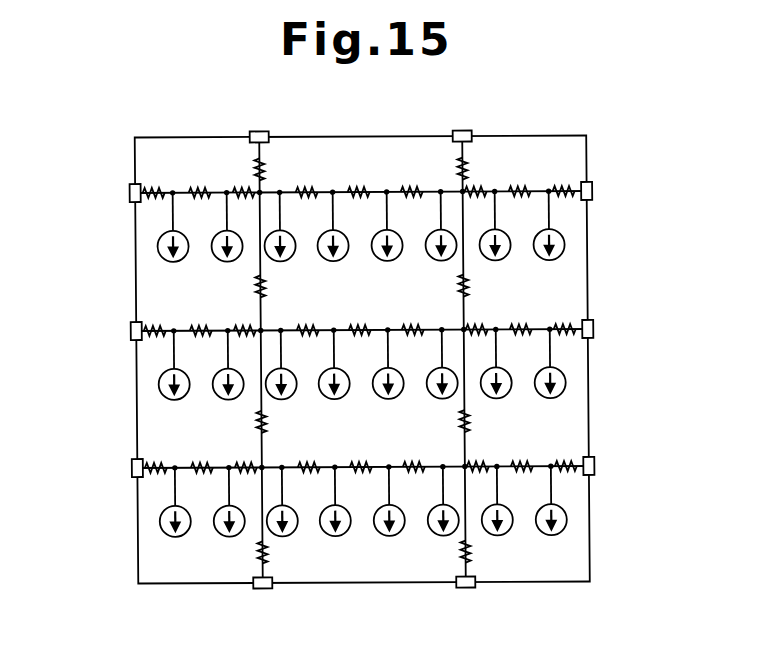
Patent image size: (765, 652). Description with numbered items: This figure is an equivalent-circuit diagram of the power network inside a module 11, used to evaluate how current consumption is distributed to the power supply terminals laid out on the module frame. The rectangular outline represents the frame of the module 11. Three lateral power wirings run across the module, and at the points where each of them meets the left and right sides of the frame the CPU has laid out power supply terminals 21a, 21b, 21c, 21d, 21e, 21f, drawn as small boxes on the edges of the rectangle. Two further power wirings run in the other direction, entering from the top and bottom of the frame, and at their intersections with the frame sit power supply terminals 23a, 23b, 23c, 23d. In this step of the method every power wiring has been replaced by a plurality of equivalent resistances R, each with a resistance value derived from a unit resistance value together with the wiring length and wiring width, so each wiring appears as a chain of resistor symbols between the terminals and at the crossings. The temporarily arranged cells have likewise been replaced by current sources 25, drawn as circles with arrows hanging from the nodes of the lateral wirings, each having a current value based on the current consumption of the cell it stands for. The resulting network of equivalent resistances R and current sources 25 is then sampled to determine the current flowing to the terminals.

The module 11 is at (552, 135).
The power supply terminal 21a is at (130, 192).
The power supply terminal 21b is at (594, 192).
The power supply terminal 21c is at (130, 330).
The power supply terminal 21d is at (594, 330).
The power supply terminal 21e is at (130, 467).
The power supply terminal 21f is at (594, 467).
The power supply terminal 23a is at (259, 131).
The power supply terminal 23b is at (262, 589).
The power supply terminal 23c is at (462, 131).
The power supply terminal 23d is at (465, 589).
The current source 25 is at (362, 388).
The equivalent resistance R is at (200, 188).